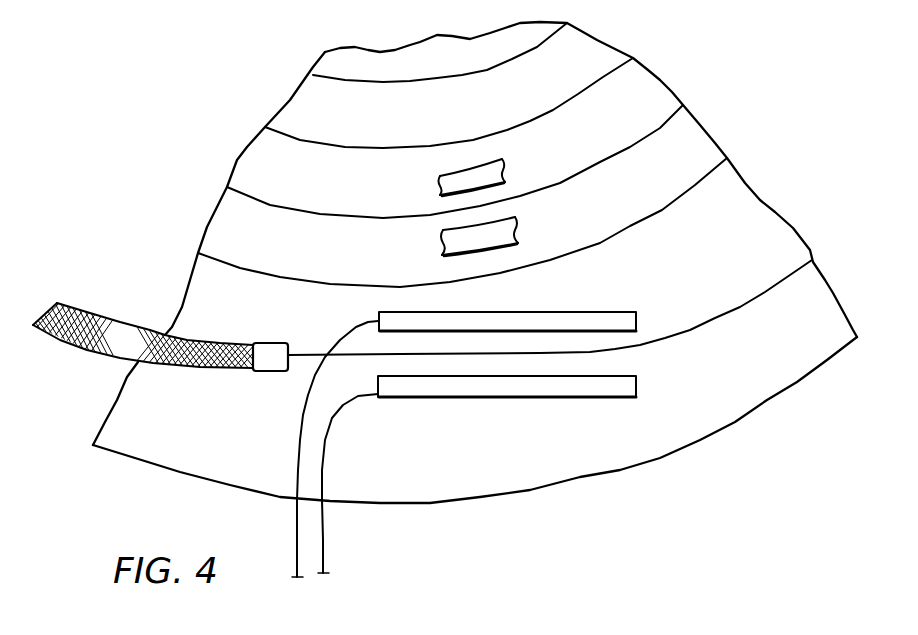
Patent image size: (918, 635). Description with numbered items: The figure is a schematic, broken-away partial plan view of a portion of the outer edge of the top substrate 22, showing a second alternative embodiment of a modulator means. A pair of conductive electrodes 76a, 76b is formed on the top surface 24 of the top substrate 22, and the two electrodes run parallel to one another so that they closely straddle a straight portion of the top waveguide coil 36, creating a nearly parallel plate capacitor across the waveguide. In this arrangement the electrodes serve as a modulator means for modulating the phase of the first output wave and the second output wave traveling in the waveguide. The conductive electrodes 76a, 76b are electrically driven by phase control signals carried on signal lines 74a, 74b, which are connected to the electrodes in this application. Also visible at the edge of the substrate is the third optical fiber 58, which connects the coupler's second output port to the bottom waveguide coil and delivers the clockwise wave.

The top substrate 22 is at (760, 200).
The top surface 24 is at (770, 370).
The top waveguide coil 36 is at (662, 210).
The third optical fiber 58 is at (130, 330).
The signal line 74a is at (296, 443).
The signal line 74b is at (327, 447).
The conductive electrode 76a is at (558, 313).
The conductive electrode 76b is at (537, 390).